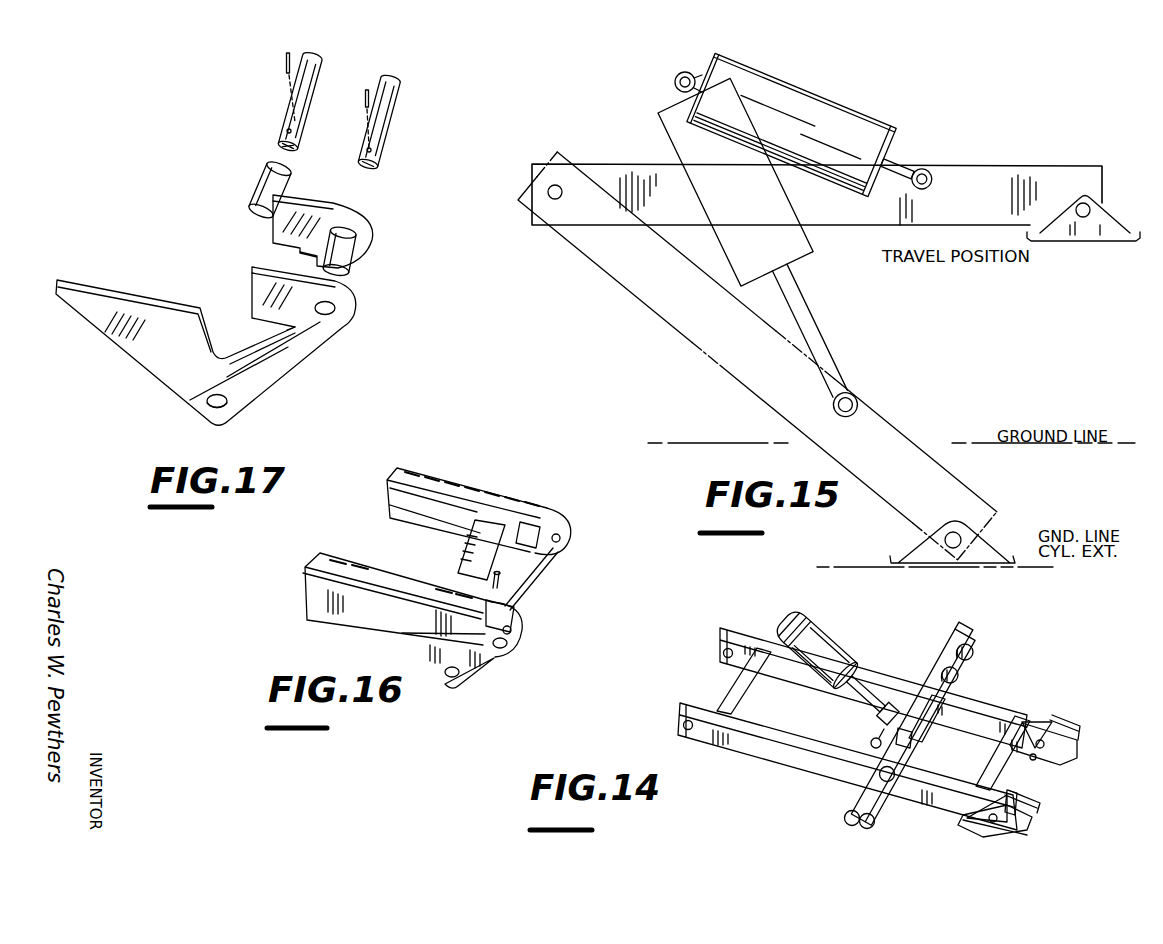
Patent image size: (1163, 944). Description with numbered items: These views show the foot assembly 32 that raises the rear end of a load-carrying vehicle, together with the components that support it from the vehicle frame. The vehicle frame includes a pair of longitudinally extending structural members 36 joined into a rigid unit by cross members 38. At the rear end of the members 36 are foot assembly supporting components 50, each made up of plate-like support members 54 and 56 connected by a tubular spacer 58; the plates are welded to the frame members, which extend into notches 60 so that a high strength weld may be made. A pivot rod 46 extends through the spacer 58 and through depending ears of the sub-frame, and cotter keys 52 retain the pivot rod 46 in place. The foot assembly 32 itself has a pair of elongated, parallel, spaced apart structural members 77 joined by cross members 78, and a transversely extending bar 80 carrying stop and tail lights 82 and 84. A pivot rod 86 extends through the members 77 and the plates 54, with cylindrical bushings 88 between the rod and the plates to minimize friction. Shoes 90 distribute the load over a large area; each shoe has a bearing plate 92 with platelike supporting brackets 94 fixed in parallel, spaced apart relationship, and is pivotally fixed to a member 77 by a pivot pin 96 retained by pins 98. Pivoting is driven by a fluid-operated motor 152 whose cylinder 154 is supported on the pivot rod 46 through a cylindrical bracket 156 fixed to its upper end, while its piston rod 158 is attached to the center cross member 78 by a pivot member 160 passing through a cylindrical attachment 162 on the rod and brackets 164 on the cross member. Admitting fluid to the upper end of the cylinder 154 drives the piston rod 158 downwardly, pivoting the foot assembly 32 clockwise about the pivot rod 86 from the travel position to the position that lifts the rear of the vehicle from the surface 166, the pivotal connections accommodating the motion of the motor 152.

In FIG. 15, the foot assembly 32 is at (866, 229).
In FIG. 14, the foot assembly 32 is at (754, 622).
In FIG. 16, the longitudinally extending structural members 36 is at (400, 503).
In FIG. 16, the cross members 38 is at (460, 560).
In FIG. 17, the pivot rod 46 is at (398, 106).
In FIG. 16, the pivot rod 46 is at (552, 565).
In FIG. 17, the foot assembly supporting components 50 is at (218, 215).
In FIG. 16, the foot assembly supporting components 50 is at (574, 530).
In FIG. 17, the cotter keys 52 is at (364, 93).
In FIG. 17, the plate-like support member 54 is at (331, 334).
In FIG. 16, the plate-like support member 54 is at (513, 650).
In FIG. 17, the plate-like support member 56 is at (368, 234).
In FIG. 16, the plate-like support member 56 is at (518, 613).
In FIG. 17, the tubular spacer 58 is at (353, 255).
In FIG. 17, the notches 60 is at (299, 253).
In FIG. 14, the structural members 77 is at (722, 630).
In FIG. 14, the cross members 78 is at (735, 683).
In FIG. 14, the transversely extending bar 80 is at (955, 628).
In FIG. 14, the stop and tail light 82 is at (973, 650).
In FIG. 14, the stop and tail light 84 is at (960, 675).
In FIG. 17, the pivot rod 86 is at (282, 101).
In FIG. 16, the pivot rod 86 is at (527, 593).
In FIG. 15, the pivot rod 86 is at (554, 185).
In FIG. 17, the cylindrical bushings 88 is at (262, 186).
In FIG. 14, the cylindrical bushings 88 is at (723, 652).
In FIG. 15, the shoes 90 is at (1082, 232).
In FIG. 14, the shoes 90 is at (1032, 776).
In FIG. 14, the bearing plate 92 is at (1052, 765).
In FIG. 14, the supporting brackets 94 is at (1070, 728).
In FIG. 14, the pivot pins 96 is at (1033, 725).
In FIG. 14, the pins 98 is at (1033, 759).
In FIG. 14, the fluid-operated motor 152 is at (862, 678).
In FIG. 15, the cylinder 154 is at (828, 97).
In FIG. 14, the cylinder 154 is at (823, 631).
In FIG. 15, the cylindrical bracket 156 is at (678, 73).
In FIG. 14, the cylindrical bracket 156 is at (793, 622).
In FIG. 15, the piston rod 158 is at (898, 158).
In FIG. 14, the piston rod 158 is at (855, 698).
In FIG. 15, the pivot member 160 is at (928, 172).
In FIG. 14, the pivot member 160 is at (874, 742).
In FIG. 14, the cylindrical attachment 162 is at (876, 724).
In FIG. 14, the brackets 164 is at (912, 746).
In FIG. 15, the surface 166 is at (980, 443).